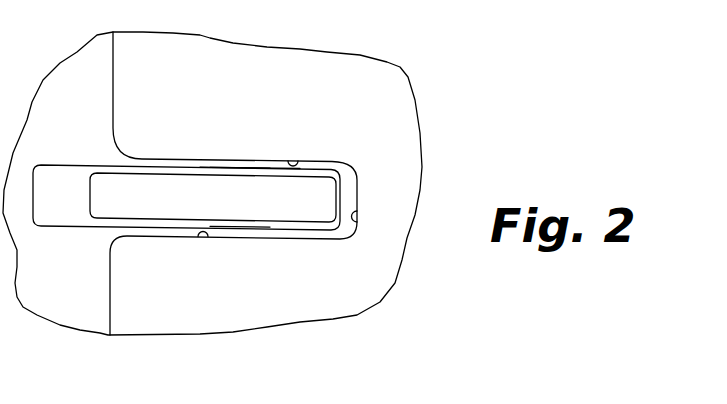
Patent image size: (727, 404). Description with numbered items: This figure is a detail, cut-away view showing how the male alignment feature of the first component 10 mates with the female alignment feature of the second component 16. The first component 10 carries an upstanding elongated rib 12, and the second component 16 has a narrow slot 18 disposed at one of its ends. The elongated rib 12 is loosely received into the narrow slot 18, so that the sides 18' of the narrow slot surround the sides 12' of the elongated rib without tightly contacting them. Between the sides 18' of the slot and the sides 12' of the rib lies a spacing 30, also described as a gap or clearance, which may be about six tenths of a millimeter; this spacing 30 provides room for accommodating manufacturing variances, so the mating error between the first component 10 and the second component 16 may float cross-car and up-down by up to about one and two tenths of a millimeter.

The first component 10 is at (73, 340).
The second component 16 is at (155, 355).
The elongated rib 12 is at (252, 175).
The sides of the elongated rib 12' is at (285, 235).
The narrow slot 18 is at (250, 119).
The sides of the narrow slot 18' is at (324, 241).
The spacing 30 is at (230, 166).